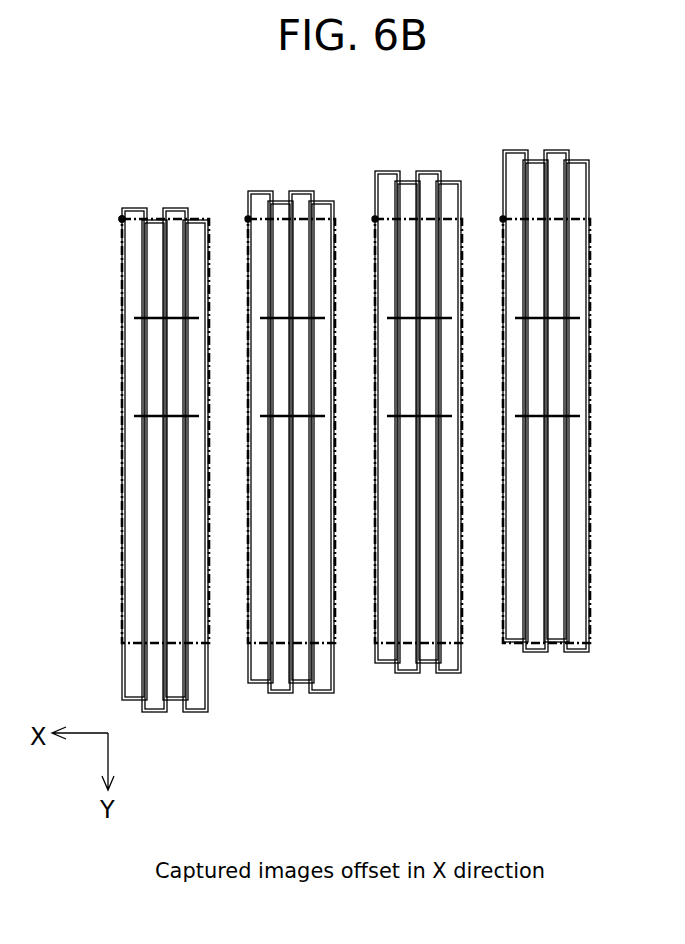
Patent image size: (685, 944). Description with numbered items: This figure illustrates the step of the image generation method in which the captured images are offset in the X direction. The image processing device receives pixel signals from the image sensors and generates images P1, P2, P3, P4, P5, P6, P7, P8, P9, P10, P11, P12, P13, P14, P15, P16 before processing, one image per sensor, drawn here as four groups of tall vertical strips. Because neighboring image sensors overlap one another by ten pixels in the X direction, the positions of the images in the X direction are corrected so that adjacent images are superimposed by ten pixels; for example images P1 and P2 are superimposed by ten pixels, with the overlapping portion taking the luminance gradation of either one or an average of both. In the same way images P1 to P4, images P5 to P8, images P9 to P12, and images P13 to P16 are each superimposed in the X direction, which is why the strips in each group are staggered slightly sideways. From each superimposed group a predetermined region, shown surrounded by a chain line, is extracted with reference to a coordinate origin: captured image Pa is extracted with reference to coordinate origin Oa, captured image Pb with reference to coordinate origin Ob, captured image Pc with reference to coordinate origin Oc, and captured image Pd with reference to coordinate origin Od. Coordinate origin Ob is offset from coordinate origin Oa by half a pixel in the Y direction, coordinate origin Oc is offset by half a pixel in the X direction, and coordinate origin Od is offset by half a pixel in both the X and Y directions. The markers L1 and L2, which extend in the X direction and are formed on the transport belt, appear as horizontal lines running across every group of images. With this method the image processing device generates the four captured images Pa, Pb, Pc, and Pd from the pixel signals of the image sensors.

The image P1 is at (127, 207).
The image P2 is at (150, 220).
The image P3 is at (175, 208).
The image P4 is at (200, 220).
The image P5 is at (252, 191).
The image P6 is at (277, 201).
The image P7 is at (300, 191).
The image P8 is at (322, 201).
The image P9 is at (379, 171).
The image P10 is at (400, 181).
The image P11 is at (420, 171).
The image P12 is at (442, 181).
The image P13 is at (510, 150).
The image P14 is at (533, 160).
The image P15 is at (550, 150).
The image P16 is at (587, 160).
The captured image Pa is at (146, 428).
The captured image Pb is at (273, 428).
The captured image Pc is at (401, 428).
The captured image Pd is at (546, 428).
The coordinate origin Oa is at (122, 219).
The coordinate origin Ob is at (248, 219).
The coordinate origin Oc is at (375, 219).
The coordinate origin Od is at (503, 219).
The marker L1 is at (611, 320).
The marker L2 is at (611, 420).